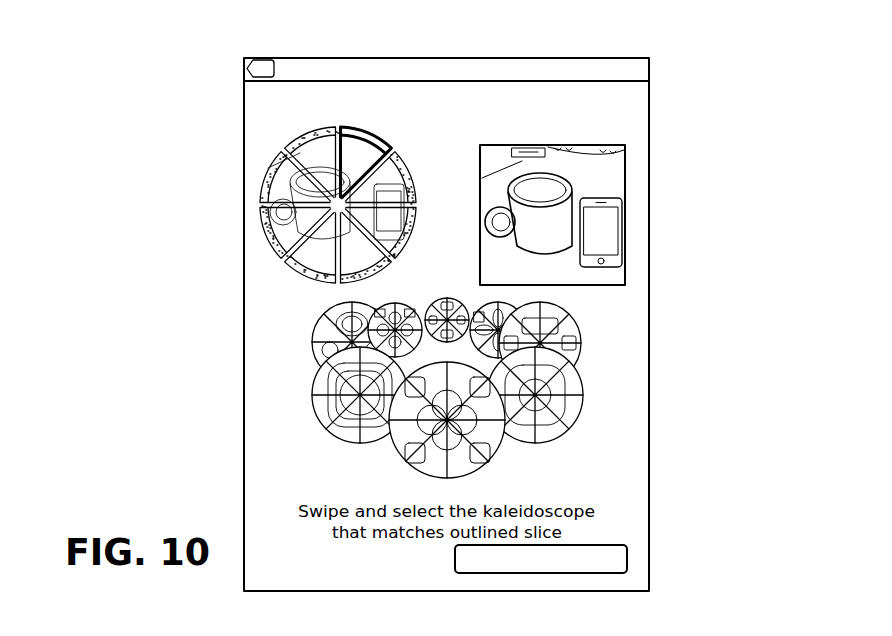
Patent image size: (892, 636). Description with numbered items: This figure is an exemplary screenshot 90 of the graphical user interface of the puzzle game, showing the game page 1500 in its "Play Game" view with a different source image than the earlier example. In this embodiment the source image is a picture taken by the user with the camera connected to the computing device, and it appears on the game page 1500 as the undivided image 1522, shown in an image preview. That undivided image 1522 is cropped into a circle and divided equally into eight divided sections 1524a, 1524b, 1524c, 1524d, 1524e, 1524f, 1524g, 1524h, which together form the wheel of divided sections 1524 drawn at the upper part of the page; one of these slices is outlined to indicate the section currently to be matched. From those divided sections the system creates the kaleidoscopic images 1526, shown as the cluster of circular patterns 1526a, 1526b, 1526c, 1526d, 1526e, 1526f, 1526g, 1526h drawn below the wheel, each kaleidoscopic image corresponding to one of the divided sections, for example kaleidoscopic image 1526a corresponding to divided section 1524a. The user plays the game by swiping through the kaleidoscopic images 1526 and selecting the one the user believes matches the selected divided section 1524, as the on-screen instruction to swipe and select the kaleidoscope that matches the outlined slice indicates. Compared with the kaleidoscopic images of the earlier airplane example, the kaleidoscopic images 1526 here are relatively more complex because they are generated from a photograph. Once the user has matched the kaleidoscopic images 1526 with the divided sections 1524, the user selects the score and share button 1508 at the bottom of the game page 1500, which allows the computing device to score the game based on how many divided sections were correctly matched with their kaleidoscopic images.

The screenshot 90 is at (610, 58).
The game page 1500 is at (618, 120).
The undivided image 1522 is at (624, 210).
The divided sections 1524 is at (331, 157).
The divided section 1524a is at (367, 131).
The divided section 1524b is at (407, 170).
The divided section 1524c is at (413, 229).
The divided section 1524d is at (380, 272).
The divided section 1524e is at (300, 275).
The divided section 1524f is at (269, 241).
The divided section 1524g is at (271, 177).
The divided section 1524h is at (299, 138).
The kaleidoscopic images 1526 is at (523, 384).
The kaleidoscopic image 1526a is at (376, 311).
The kaleidoscopic image 1526b is at (463, 304).
The kaleidoscopic image 1526c is at (580, 354).
The kaleidoscopic image 1526d is at (492, 458).
The kaleidoscopic image 1526e is at (578, 419).
The kaleidoscopic image 1526f is at (313, 345).
The kaleidoscopic image 1526g is at (520, 312).
The kaleidoscopic image 1526h is at (328, 430).
The score and share button 1508 is at (628, 560).